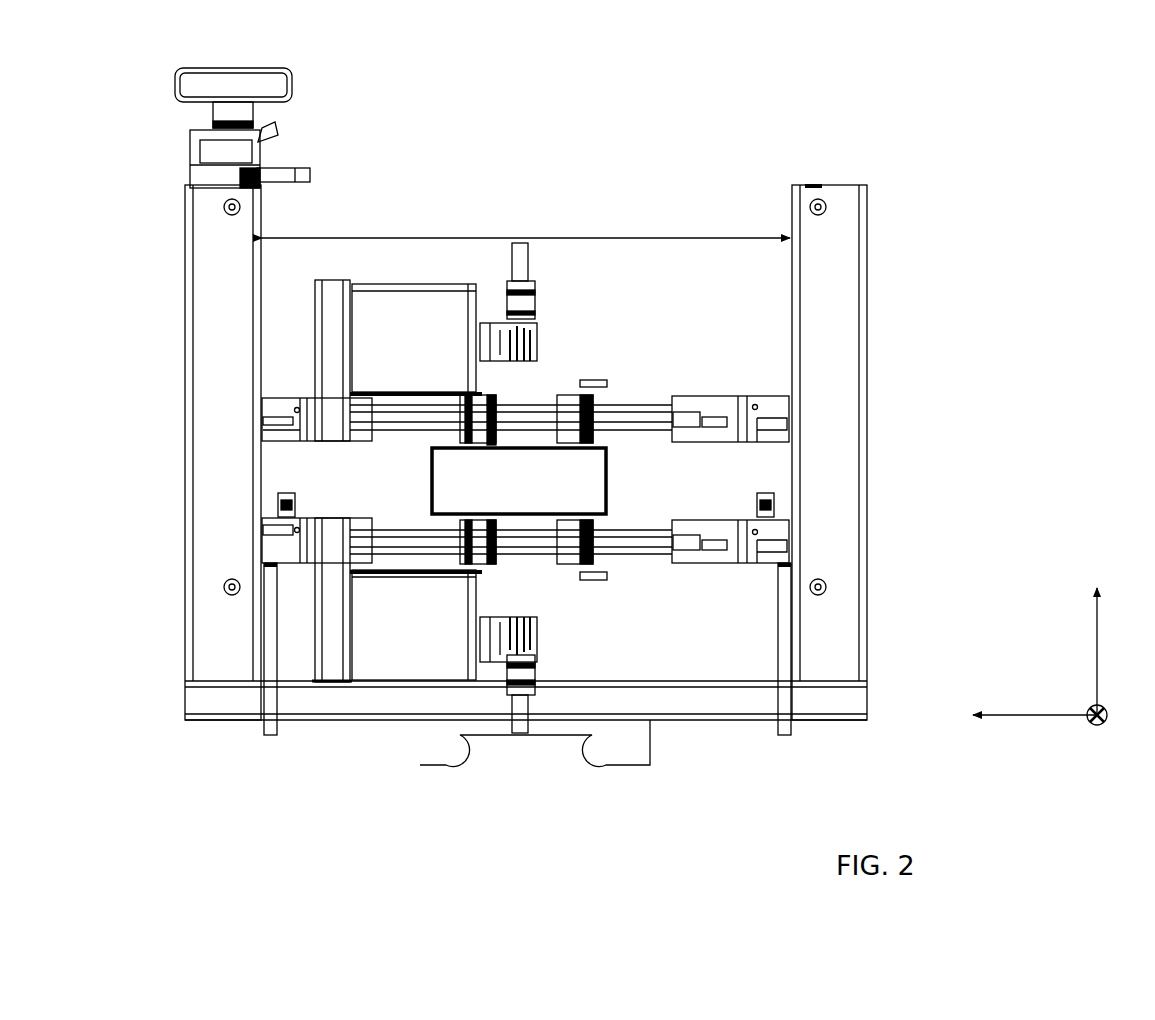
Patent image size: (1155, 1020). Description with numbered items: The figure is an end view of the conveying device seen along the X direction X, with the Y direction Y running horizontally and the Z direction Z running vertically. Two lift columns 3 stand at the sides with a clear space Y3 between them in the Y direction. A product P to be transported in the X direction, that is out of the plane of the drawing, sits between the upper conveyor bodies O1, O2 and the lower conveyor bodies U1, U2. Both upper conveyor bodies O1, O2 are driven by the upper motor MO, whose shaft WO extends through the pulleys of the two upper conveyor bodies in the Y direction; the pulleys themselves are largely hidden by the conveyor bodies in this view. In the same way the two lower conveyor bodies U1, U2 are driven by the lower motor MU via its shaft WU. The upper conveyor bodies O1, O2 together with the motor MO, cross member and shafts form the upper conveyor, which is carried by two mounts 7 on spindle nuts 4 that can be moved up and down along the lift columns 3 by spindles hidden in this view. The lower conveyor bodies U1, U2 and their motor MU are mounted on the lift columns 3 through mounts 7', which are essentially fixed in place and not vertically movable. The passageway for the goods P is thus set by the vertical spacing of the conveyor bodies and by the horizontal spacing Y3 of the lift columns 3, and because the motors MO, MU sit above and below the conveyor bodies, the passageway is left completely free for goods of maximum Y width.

The lift column 3 is at (205, 280).
The mount 7 is at (460, 380).
The mount 7' is at (513, 574).
The spindle nut 4 is at (278, 430).
The clear space Y3 is at (526, 213).
The upper motor MO is at (398, 360).
The lower motor MU is at (397, 600).
The shaft WO is at (637, 415).
The shaft WU is at (635, 540).
The upper conveyor body O1 is at (575, 432).
The upper conveyor body O2 is at (477, 420).
The lower conveyor body U1 is at (563, 543).
The lower conveyor body U2 is at (475, 545).
The product P is at (526, 495).
The X direction X is at (1111, 724).
The Y direction Y is at (1035, 694).
The Z direction Z is at (1113, 651).